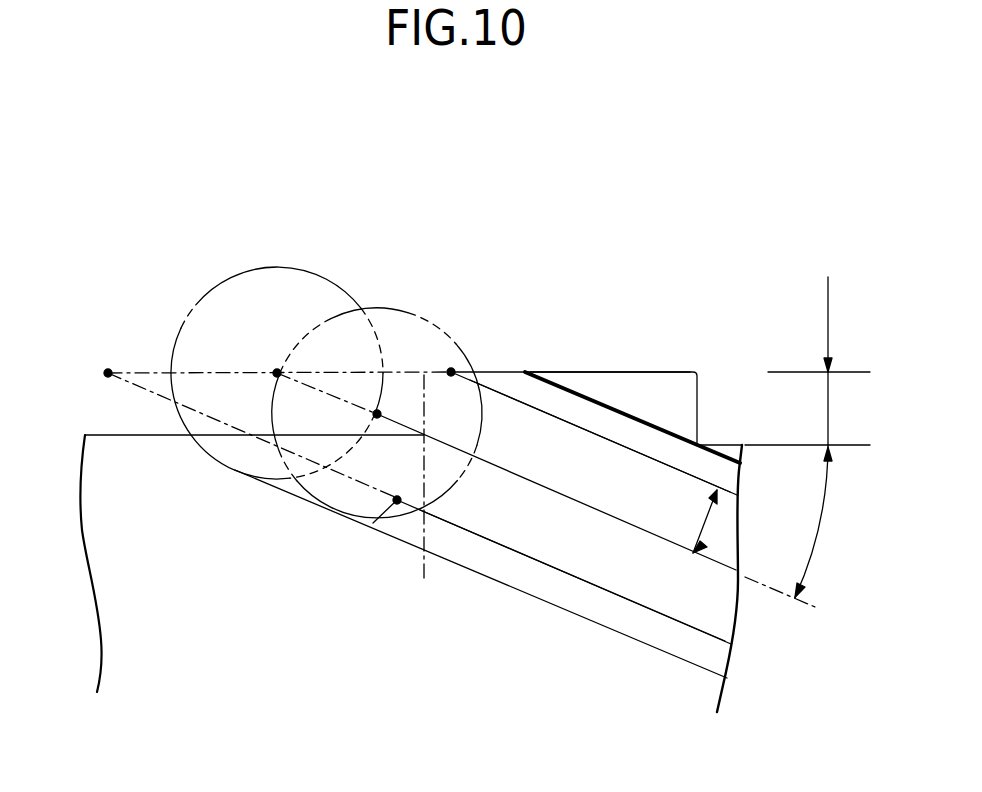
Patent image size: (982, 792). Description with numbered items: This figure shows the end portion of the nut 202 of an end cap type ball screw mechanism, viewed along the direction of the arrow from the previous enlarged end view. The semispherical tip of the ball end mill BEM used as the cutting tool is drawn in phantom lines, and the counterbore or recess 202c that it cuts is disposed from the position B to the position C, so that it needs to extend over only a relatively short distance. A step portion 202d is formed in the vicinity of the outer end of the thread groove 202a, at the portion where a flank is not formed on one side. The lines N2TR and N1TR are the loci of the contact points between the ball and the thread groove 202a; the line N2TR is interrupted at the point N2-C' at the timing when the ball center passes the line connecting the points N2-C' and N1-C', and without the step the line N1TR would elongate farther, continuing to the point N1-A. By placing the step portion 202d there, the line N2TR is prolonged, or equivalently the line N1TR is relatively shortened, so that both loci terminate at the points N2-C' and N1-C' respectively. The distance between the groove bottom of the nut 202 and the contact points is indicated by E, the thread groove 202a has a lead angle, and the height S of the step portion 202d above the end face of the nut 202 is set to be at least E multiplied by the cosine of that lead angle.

The nut 202 is at (112, 452).
The thread groove 202a is at (636, 416).
The counterbore (recess) 202c is at (350, 510).
The step portion 202d is at (608, 382).
The ball end mill BEM is at (268, 268).
The point N1-A is at (108, 372).
The point N2-C' is at (592, 393).
The point N1-C' is at (549, 570).
The position B is at (315, 374).
The position C is at (554, 476).
The line N2TR is at (576, 428).
The line N1TR is at (536, 562).
The distance E is at (697, 521).
The height S is at (807, 361).